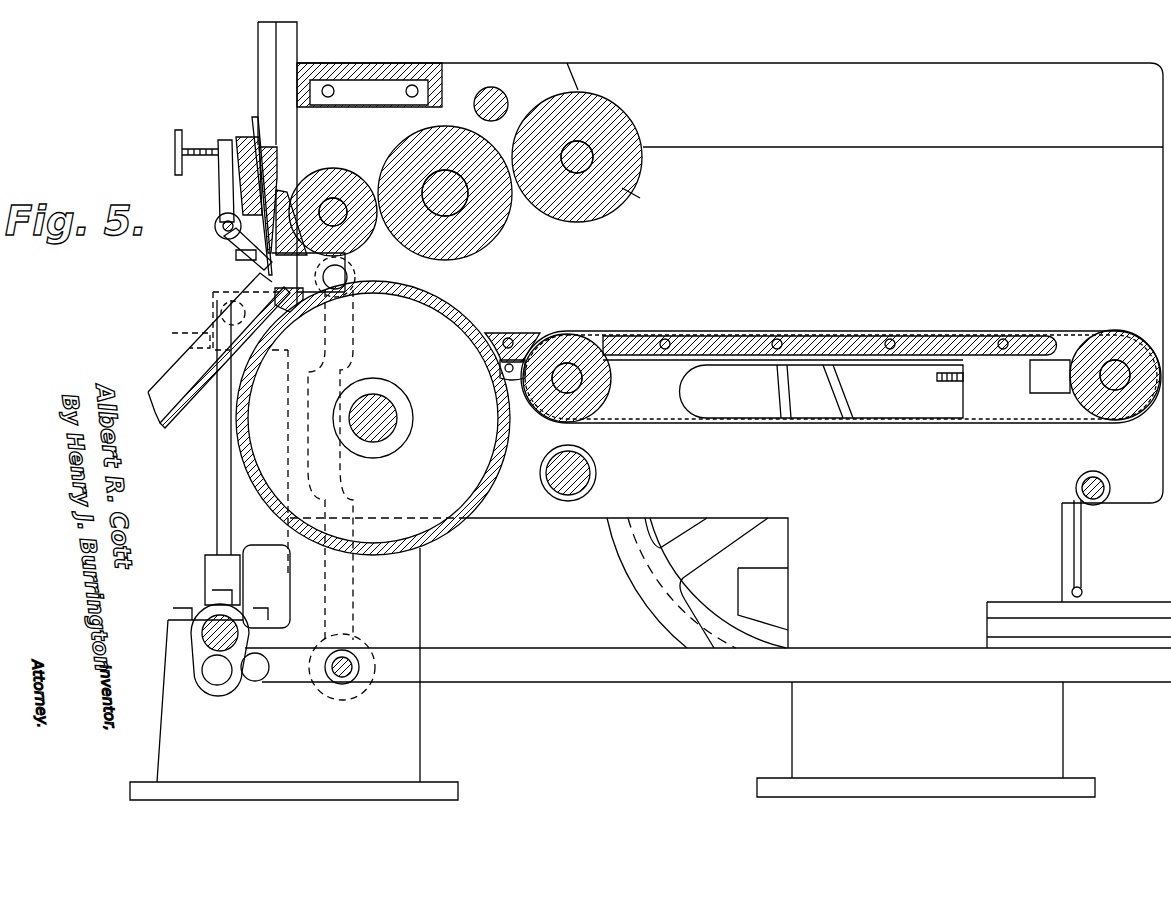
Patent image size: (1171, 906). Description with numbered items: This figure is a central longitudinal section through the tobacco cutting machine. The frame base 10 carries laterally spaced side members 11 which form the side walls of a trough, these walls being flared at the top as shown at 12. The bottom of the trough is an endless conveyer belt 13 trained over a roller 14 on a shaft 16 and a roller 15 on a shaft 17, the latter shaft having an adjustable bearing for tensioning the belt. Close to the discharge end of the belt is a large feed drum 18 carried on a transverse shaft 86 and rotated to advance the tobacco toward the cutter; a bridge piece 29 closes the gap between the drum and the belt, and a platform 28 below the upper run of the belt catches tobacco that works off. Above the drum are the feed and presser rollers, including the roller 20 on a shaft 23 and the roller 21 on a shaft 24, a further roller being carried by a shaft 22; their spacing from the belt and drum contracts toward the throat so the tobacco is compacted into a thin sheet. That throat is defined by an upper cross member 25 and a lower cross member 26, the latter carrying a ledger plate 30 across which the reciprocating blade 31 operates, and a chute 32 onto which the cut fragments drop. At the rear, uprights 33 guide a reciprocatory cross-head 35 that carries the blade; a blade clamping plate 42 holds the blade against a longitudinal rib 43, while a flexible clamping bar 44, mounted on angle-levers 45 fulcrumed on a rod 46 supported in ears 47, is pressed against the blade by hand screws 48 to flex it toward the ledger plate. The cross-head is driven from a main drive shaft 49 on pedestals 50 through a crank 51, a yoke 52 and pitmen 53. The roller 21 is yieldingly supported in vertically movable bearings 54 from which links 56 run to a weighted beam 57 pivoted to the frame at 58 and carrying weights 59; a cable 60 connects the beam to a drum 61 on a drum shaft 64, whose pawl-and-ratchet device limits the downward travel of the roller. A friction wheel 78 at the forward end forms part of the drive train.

The frame base 10 is at (644, 197).
The side members 11 is at (612, 496).
The flared top of side walls 12 is at (730, 283).
The endless conveyer belt 13 is at (925, 336).
The roller 14 is at (612, 380).
The roller 15 is at (1088, 408).
The shaft 16 is at (576, 350).
The shaft 17 is at (1116, 345).
The feed drum 18 is at (468, 322).
The feed and presser roller 20 is at (496, 226).
The feed and presser roller 21 is at (335, 182).
The shaft 22 is at (583, 152).
The shaft 23 is at (446, 200).
The shaft 24 is at (338, 208).
The cross member 25 is at (372, 258).
The cross member 26 is at (325, 308).
The platform 28 is at (862, 355).
The bridge piece 29 is at (532, 330).
The ledger plate 30 is at (282, 338).
The blade 31 is at (283, 262).
The chute 32 is at (180, 368).
The uprights 33 is at (298, 556).
The cross-head 35 is at (242, 140).
The blade clamping plate 42 is at (279, 160).
The longitudinal rib 43 is at (256, 118).
The clamping bar 44 is at (262, 272).
The angle-levers 45 is at (219, 206).
The rod 46 is at (214, 229).
The ears 47 is at (252, 240).
The hand screws 48 is at (176, 152).
The main drive shaft 49 is at (205, 650).
The pedestals 50 is at (180, 612).
The crank 51 is at (210, 696).
The yoke 52 is at (241, 575).
The pitmen 53 is at (218, 432).
The bearings 54 is at (392, 292).
The links 56 is at (372, 495).
The weighted beam 57 is at (608, 678).
The pivot 58 is at (256, 682).
The weights 59 is at (1010, 605).
The cable 60 is at (1083, 564).
The drum 61 is at (1104, 478).
The drum shaft 64 is at (1106, 492).
The friction wheel 78 is at (640, 572).
The transverse shaft 86 is at (392, 410).